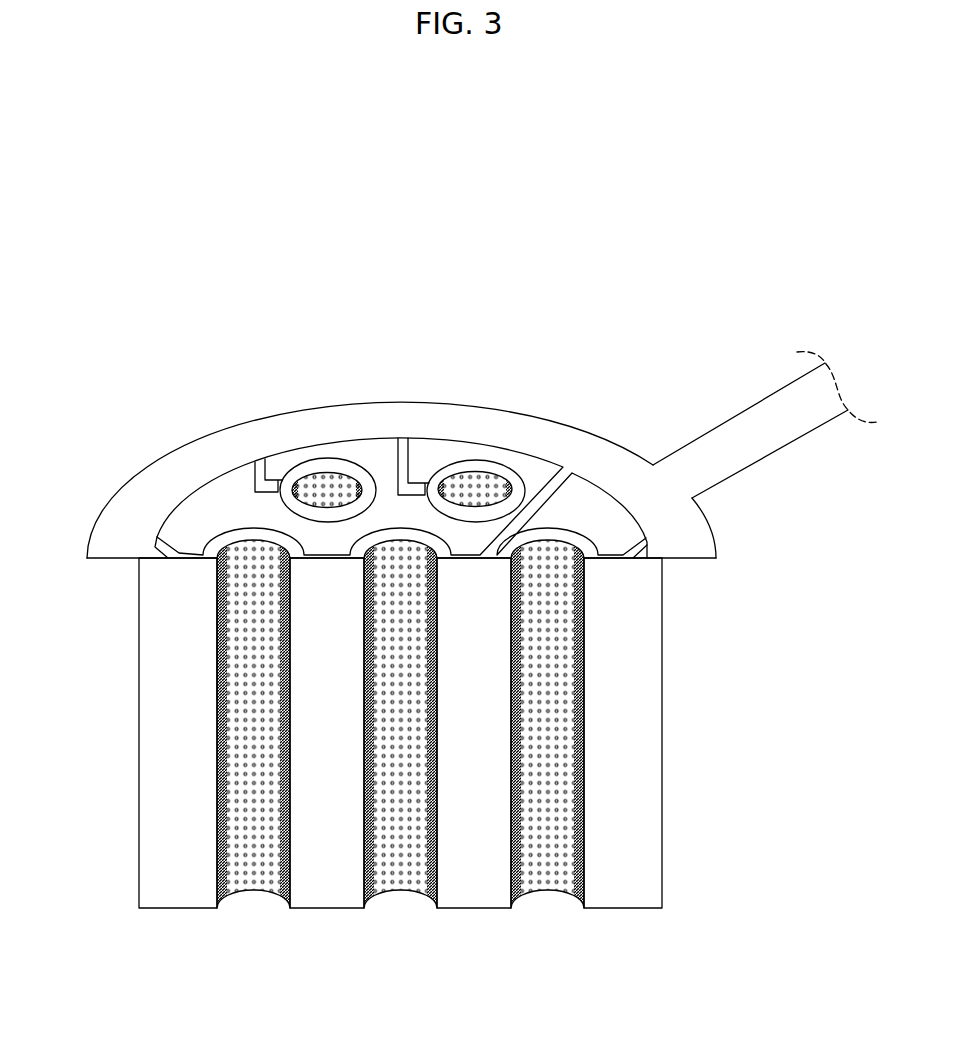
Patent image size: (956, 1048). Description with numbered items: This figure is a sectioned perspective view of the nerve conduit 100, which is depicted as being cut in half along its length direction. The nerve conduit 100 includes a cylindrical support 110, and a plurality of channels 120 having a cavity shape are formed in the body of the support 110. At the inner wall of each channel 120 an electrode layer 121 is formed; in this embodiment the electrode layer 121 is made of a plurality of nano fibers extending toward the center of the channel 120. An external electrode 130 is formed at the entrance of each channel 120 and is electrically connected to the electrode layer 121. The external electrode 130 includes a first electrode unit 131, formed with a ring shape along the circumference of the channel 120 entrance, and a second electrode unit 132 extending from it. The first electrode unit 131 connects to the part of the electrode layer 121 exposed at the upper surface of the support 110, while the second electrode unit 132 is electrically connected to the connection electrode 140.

The nerve conduit 100 is at (103, 311).
The cylindrical support 110 is at (152, 803).
The channel 120 is at (333, 477).
The electrode layer 121 is at (235, 632).
The external electrode 130 is at (312, 463).
The first electrode unit 131 is at (325, 463).
The second electrode unit 132 is at (260, 482).
The connection electrode 140 is at (215, 450).